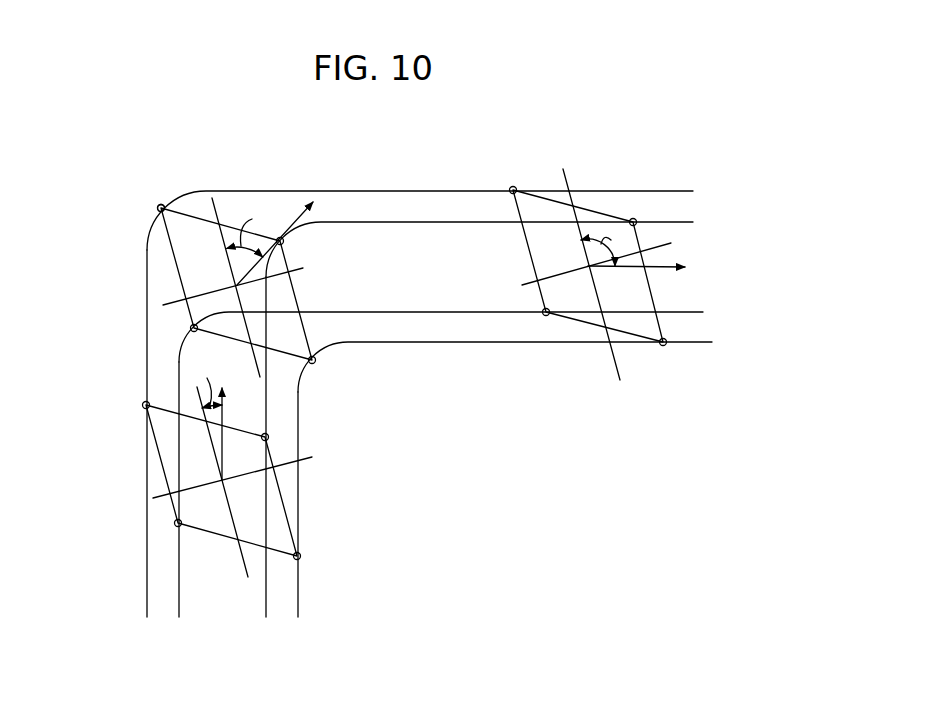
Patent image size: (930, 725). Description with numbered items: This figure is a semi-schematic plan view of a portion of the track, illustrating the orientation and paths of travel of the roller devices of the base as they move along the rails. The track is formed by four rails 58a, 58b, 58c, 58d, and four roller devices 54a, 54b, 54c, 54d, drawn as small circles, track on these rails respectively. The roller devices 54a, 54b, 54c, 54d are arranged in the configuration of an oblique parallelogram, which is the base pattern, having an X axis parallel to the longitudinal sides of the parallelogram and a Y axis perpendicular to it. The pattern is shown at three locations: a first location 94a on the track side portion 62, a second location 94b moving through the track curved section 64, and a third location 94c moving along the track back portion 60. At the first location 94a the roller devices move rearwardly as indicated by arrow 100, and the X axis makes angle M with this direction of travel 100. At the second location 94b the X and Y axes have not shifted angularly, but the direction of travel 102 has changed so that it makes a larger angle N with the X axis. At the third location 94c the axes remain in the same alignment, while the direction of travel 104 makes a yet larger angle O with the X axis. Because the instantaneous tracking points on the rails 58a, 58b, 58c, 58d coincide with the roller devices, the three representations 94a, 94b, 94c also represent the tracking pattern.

The track back portion 60 is at (442, 179).
The track side portion 62 is at (323, 447).
The track curved section 64 is at (162, 187).
The rail 58a is at (147, 363).
The rail 58b is at (268, 403).
The rail 58c is at (300, 522).
The rail 58d is at (178, 593).
The roller device 54a is at (146, 405).
The roller device 54b is at (268, 430).
The roller device 54c is at (297, 556).
The roller device 54d is at (178, 524).
The first location of base pattern 94a is at (226, 469).
The second location of base pattern 94b is at (167, 257).
The third location of base pattern 94c is at (582, 330).
The direction of travel arrow 100 is at (222, 437).
The direction of travel 102 is at (300, 213).
The direction of travel 104 is at (663, 270).